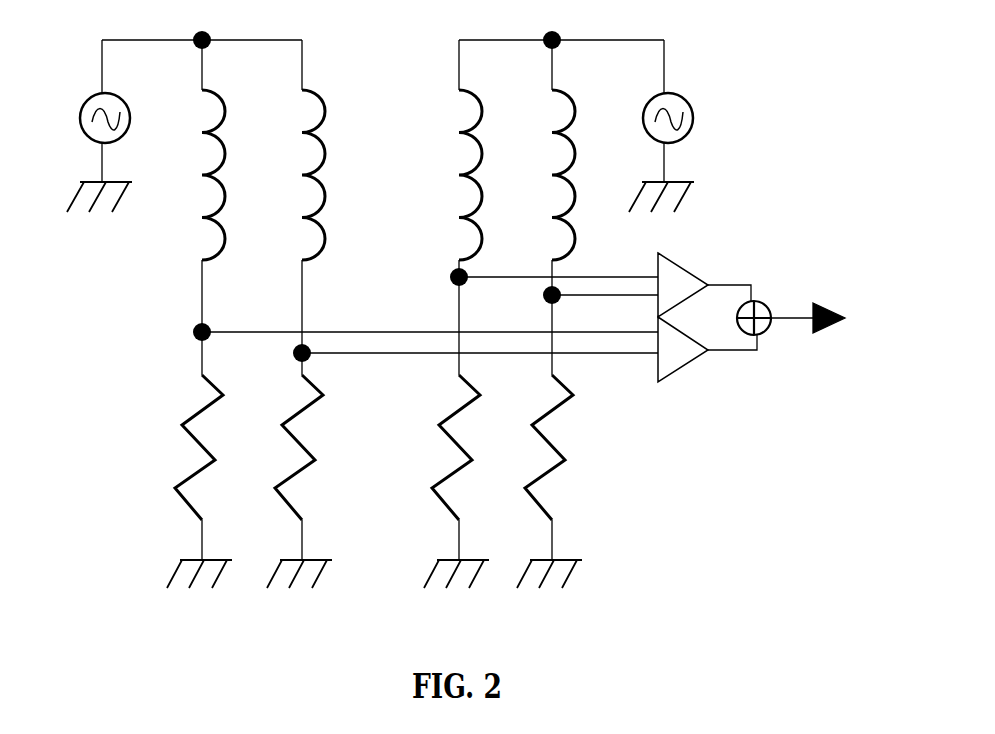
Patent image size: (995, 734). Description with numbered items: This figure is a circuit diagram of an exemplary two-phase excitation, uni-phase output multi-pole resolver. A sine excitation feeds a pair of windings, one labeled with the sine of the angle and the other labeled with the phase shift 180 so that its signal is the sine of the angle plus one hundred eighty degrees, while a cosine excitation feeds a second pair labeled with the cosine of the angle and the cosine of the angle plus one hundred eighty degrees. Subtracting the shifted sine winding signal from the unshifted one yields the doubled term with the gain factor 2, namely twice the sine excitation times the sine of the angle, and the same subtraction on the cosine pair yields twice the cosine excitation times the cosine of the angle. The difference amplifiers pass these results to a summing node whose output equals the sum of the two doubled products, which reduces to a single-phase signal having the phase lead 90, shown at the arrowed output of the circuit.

The resolver excitation and output circuit of FIG. 2 is at (426, 294).
The phase-shifted (θ+180) secondary windings 180 is at (465, 130).
The summed output VSin(ωt−θ+90) 90 is at (738, 347).